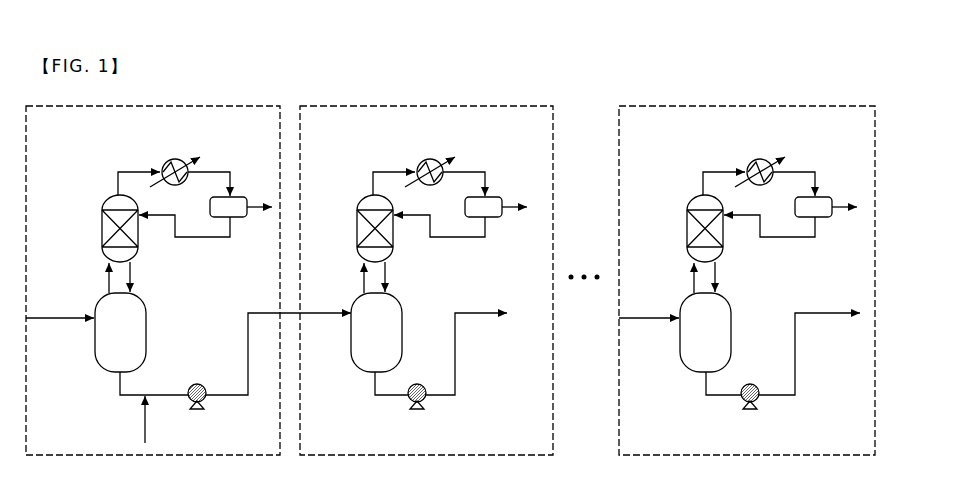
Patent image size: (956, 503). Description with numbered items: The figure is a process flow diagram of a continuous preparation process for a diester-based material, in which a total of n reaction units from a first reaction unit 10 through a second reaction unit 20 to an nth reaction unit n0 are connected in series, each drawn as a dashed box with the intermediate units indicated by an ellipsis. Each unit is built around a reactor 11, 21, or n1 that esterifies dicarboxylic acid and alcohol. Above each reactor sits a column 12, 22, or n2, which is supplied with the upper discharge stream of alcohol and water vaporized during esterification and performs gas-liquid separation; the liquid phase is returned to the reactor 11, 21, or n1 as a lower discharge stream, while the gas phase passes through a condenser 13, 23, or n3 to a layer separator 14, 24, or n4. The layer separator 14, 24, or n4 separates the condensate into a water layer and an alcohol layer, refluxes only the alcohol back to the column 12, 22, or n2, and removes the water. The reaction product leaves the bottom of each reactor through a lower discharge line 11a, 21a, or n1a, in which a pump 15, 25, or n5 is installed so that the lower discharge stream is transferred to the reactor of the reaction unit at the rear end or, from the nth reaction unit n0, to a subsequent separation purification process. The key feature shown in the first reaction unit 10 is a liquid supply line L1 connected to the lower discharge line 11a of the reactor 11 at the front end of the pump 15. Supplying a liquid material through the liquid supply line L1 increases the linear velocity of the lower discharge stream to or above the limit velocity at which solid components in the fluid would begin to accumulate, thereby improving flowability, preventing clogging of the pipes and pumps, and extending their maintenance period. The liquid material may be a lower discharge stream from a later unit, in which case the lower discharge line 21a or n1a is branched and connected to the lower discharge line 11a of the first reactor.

The first reaction unit 10 is at (53, 482).
The reactor 11 is at (120, 332).
The lower discharge line 11a is at (120, 380).
The column 12 is at (102, 213).
The condenser 13 is at (161, 163).
The layer separator 14 is at (234, 196).
The pump 15 is at (205, 406).
The liquid supply line L1 is at (145, 415).
The second reaction unit 20 is at (325, 482).
The reactor 21 is at (376, 332).
The lower discharge line 21a is at (375, 380).
The column 22 is at (357, 222).
The condenser 23 is at (416, 163).
The layer separator 24 is at (487, 196).
The pump 25 is at (425, 406).
The nth reaction unit n0 is at (647, 482).
The reactor n1 is at (705, 332).
The lower discharge line n1a is at (707, 380).
The column n2 is at (687, 222).
The condenser n3 is at (746, 163).
The layer separator n4 is at (818, 196).
The pump n5 is at (758, 406).